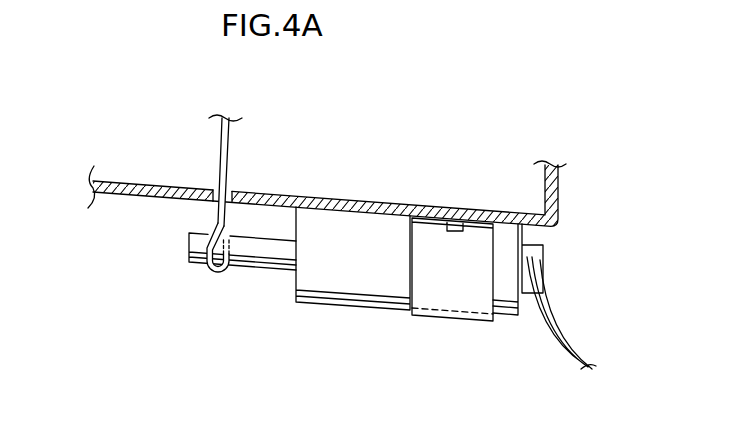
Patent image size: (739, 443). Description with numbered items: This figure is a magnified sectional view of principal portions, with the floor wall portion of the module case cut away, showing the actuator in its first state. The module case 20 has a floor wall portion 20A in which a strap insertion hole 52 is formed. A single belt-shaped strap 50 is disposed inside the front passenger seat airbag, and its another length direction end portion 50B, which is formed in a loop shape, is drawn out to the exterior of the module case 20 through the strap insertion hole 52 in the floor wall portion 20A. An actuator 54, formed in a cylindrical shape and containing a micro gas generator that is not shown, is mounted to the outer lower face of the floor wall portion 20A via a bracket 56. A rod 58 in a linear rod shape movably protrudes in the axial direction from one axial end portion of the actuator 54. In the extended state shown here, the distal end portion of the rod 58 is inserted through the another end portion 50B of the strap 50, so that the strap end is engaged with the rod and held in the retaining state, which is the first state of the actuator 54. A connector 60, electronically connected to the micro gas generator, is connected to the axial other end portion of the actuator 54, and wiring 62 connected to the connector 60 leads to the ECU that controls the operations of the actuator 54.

The module case 20 is at (136, 196).
The floor wall portion 20A is at (112, 193).
The strap 50 is at (232, 137).
The another length direction end portion 50B is at (205, 275).
The strap insertion hole 52 is at (233, 189).
The actuator 54 is at (352, 273).
The bracket 56 is at (453, 292).
The rod 58 is at (270, 252).
The connector 60 is at (546, 266).
The wiring 62 is at (539, 318).